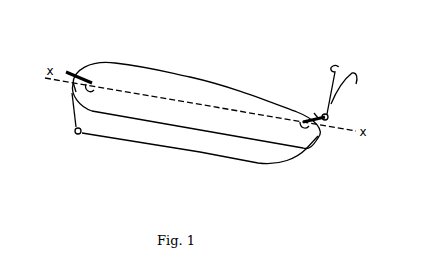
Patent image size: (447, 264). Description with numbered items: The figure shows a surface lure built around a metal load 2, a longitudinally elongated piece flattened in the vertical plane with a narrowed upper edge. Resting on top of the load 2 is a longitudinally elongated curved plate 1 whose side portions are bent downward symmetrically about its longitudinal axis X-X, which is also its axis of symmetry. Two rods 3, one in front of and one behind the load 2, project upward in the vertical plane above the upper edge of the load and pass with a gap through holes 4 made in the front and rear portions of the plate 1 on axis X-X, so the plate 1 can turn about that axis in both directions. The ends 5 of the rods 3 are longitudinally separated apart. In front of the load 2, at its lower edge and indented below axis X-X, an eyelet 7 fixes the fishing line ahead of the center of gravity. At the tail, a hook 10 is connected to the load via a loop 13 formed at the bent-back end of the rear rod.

The longitudinally elongated curved plate 1 is at (262, 133).
The metal load 2 is at (150, 137).
The rods 3 is at (92, 82).
The holes 4 is at (88, 82).
The ends of rods 5 is at (73, 82).
The eyelet 7 is at (76, 136).
The hook 10 is at (338, 66).
The loop 13 is at (330, 116).